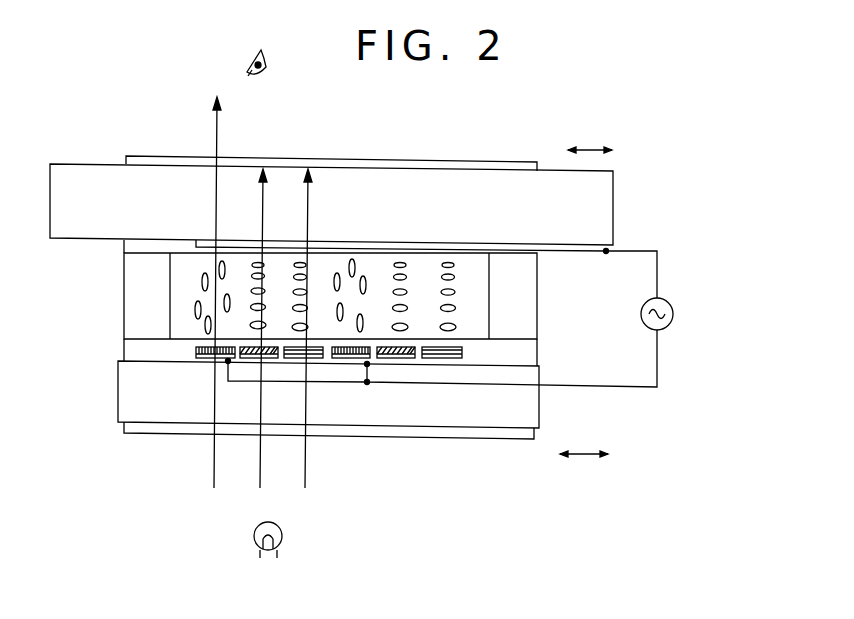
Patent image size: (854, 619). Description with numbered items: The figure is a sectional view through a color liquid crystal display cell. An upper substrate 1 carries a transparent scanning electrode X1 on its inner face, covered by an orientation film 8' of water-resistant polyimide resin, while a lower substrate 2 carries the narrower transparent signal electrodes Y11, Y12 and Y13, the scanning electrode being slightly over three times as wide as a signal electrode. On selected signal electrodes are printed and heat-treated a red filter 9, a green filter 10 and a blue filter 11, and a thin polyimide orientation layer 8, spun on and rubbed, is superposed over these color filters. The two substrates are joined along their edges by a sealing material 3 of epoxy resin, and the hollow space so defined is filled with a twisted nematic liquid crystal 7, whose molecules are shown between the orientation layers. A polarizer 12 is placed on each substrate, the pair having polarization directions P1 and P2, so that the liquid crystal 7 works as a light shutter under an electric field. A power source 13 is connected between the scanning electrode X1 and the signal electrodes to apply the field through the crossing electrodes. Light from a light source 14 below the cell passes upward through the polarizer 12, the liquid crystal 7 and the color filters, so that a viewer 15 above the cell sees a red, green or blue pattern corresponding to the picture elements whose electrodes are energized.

The substrate 1 is at (602, 185).
The substrate 2 is at (518, 398).
The sealing material 3 is at (520, 312).
The liquid crystal 7 is at (202, 283).
The orientation layer 8 is at (306, 350).
The orientation film 8' is at (105, 259).
The red filter 9 is at (352, 362).
The green filter 10 is at (400, 360).
The blue filter 11 is at (440, 360).
The polarizer 12 is at (155, 155).
The power source 13 is at (667, 328).
The light source 14 is at (253, 540).
The viewer 15 is at (270, 57).
The scanning electrode X1 is at (590, 243).
The signal electrode Y11 is at (208, 362).
The signal electrode Y12 is at (252, 362).
The signal electrode Y13 is at (293, 362).
The polarizer direction P1 is at (590, 134).
The polarizer direction P2 is at (584, 472).